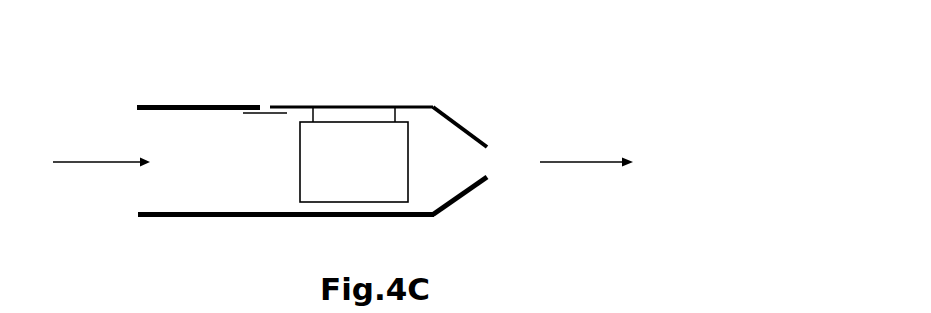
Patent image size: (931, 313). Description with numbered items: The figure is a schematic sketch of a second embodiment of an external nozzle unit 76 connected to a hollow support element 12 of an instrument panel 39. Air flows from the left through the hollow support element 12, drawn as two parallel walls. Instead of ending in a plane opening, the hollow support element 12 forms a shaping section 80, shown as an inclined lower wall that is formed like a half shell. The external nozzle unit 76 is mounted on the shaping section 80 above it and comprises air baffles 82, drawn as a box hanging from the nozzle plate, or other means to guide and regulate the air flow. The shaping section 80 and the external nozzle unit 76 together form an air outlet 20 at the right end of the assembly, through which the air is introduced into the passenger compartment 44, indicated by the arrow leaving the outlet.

The instrument panel 39 is at (119, 60).
The external nozzle unit 76 is at (353, 105).
The air baffles 82 is at (369, 178).
The air outlet 20 is at (488, 162).
The shaping section 80 is at (463, 200).
The hollow support element 12 is at (226, 167).
The passenger compartment 44 is at (682, 242).